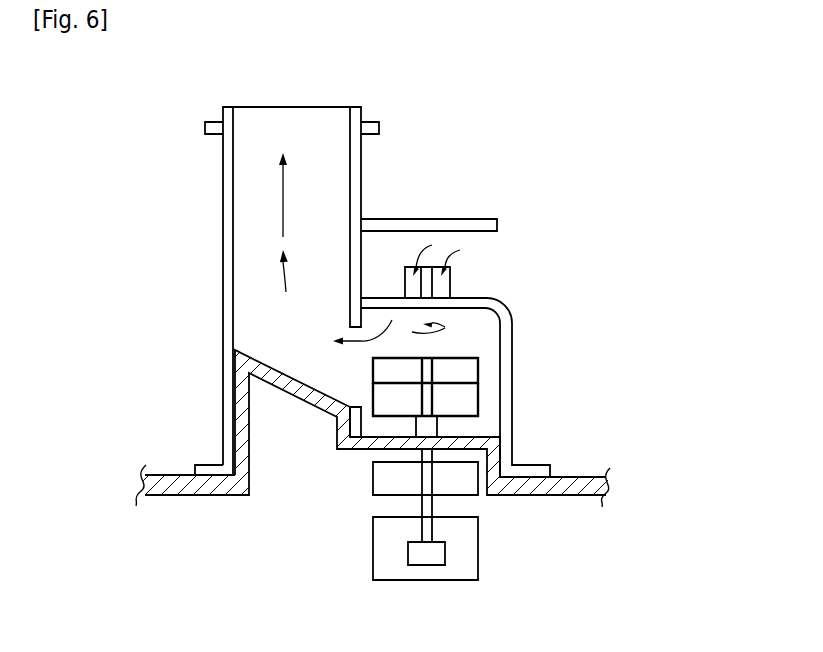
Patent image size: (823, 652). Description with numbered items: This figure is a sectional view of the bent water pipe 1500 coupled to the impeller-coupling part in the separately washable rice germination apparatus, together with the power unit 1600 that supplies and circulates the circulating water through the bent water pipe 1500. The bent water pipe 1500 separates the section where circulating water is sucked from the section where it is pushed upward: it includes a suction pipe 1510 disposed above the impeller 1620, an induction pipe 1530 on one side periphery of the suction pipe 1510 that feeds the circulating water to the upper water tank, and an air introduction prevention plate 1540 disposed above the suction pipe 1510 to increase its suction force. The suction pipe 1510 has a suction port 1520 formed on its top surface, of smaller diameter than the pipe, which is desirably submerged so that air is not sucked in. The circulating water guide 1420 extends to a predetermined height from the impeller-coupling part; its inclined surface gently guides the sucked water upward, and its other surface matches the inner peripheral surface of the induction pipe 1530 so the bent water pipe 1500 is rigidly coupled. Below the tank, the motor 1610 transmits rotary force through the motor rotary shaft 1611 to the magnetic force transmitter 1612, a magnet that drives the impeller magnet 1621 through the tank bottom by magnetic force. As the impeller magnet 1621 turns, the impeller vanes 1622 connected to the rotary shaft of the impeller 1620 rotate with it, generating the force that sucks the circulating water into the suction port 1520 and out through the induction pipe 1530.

The circulating water guide 1420 is at (256, 364).
The bent water pipe 1500 is at (405, 183).
The suction pipe 1510 is at (508, 313).
The suction port 1520 is at (443, 285).
The induction pipe 1530 is at (223, 195).
The air introduction prevention plate 1540 is at (497, 221).
The power unit 1600 is at (402, 531).
The motor 1610 is at (480, 567).
The motor rotary shaft 1611 is at (433, 510).
The magnetic force transmitter 1612 is at (465, 460).
The impeller 1620 is at (551, 354).
The impeller magnet 1621 is at (465, 400).
The impeller vanes 1622 is at (465, 372).